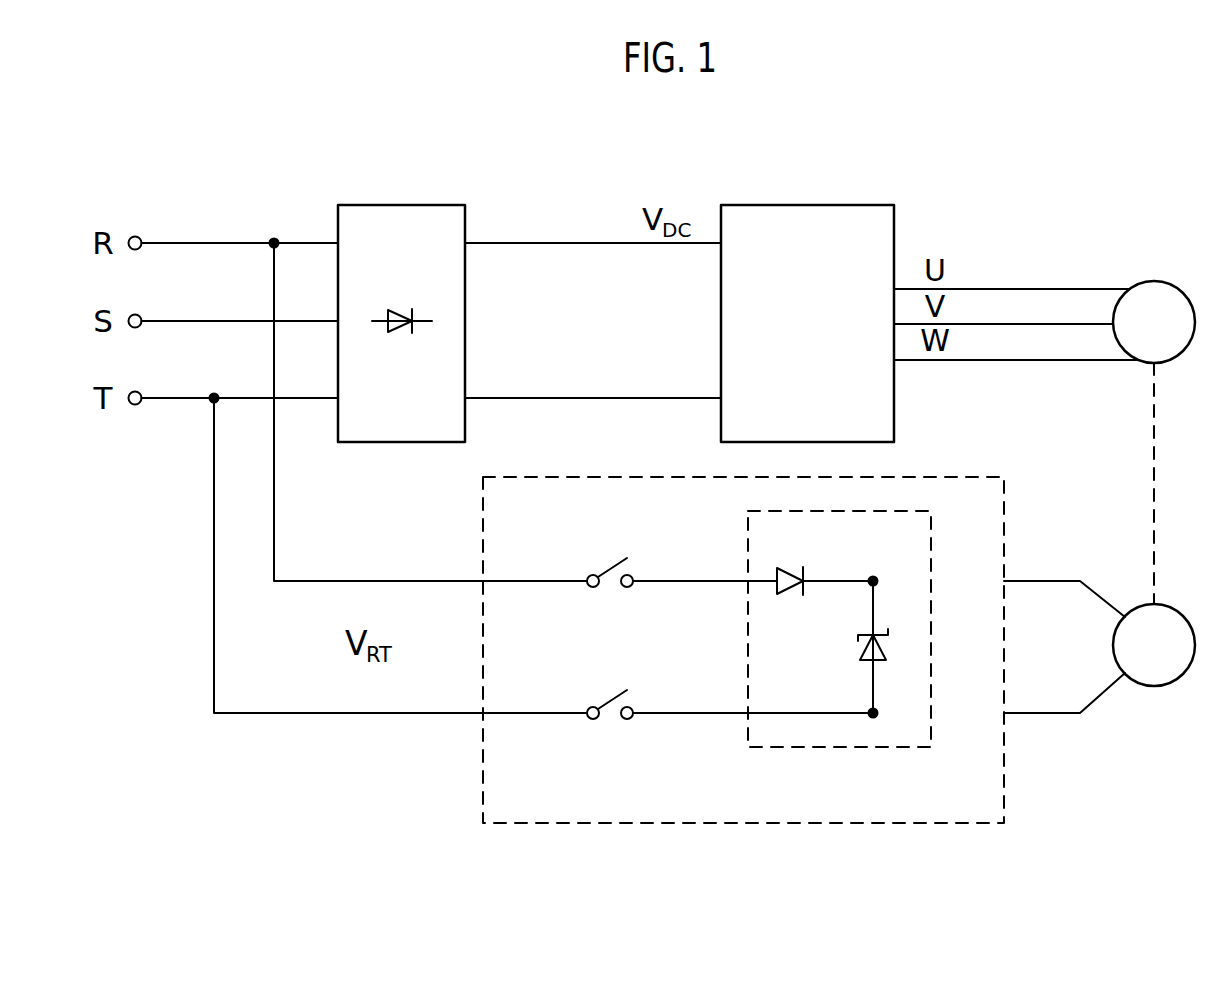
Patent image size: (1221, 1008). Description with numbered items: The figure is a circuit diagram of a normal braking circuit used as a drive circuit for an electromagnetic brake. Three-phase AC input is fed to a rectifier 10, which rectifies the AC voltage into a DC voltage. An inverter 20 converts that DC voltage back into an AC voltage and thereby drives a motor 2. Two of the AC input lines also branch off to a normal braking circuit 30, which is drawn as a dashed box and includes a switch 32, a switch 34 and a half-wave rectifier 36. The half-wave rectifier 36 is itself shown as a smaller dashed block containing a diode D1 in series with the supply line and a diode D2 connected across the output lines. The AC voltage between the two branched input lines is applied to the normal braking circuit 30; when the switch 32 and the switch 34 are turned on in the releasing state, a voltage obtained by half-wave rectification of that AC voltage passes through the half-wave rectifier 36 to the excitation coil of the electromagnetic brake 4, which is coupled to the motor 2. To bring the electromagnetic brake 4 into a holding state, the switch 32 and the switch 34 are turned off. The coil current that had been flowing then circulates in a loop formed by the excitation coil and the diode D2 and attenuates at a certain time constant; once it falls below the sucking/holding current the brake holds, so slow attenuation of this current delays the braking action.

The motor 2 is at (1173, 281).
The electromagnetic brake 4 is at (1173, 605).
The rectifier 10 is at (393, 205).
The inverter 20 is at (805, 205).
The normal braking circuit 30 is at (688, 825).
The switch 32 is at (606, 557).
The switch 34 is at (605, 728).
The half-wave rectifier 36 is at (839, 661).
The diode D1 is at (790, 557).
The diode D2 is at (850, 645).